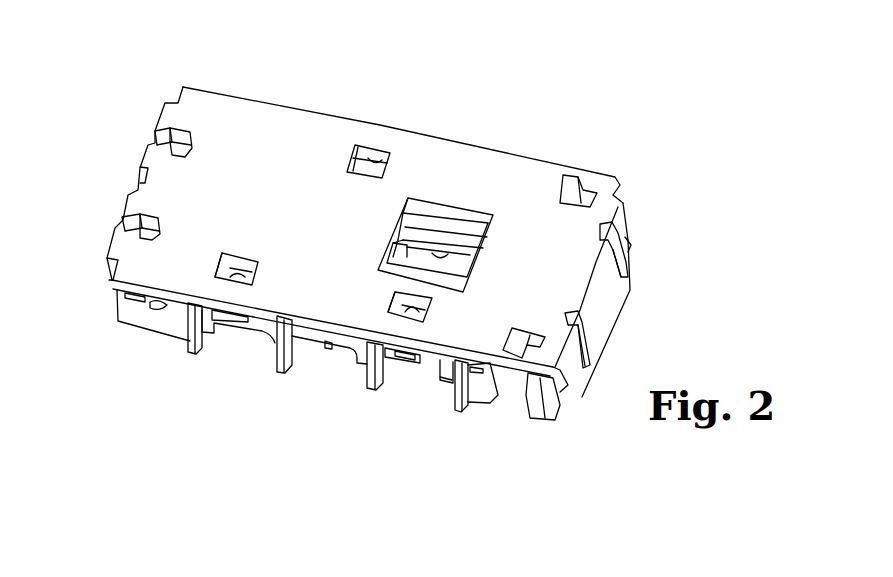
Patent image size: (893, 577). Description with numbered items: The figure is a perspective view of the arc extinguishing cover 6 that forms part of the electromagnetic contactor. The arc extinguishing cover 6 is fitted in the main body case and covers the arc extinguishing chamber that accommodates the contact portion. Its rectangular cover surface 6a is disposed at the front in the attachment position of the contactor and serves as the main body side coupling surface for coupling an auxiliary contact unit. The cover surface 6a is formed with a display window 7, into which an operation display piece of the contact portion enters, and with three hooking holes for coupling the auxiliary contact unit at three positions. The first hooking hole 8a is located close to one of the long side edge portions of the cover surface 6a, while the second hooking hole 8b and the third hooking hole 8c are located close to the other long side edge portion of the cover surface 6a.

The arc extinguishing cover 6 is at (280, 100).
The cover surface 6a is at (513, 185).
The display window 7 is at (453, 247).
The first hooking hole 8a is at (387, 150).
The second hooking hole 8b is at (232, 283).
The third hooking hole 8c is at (400, 310).